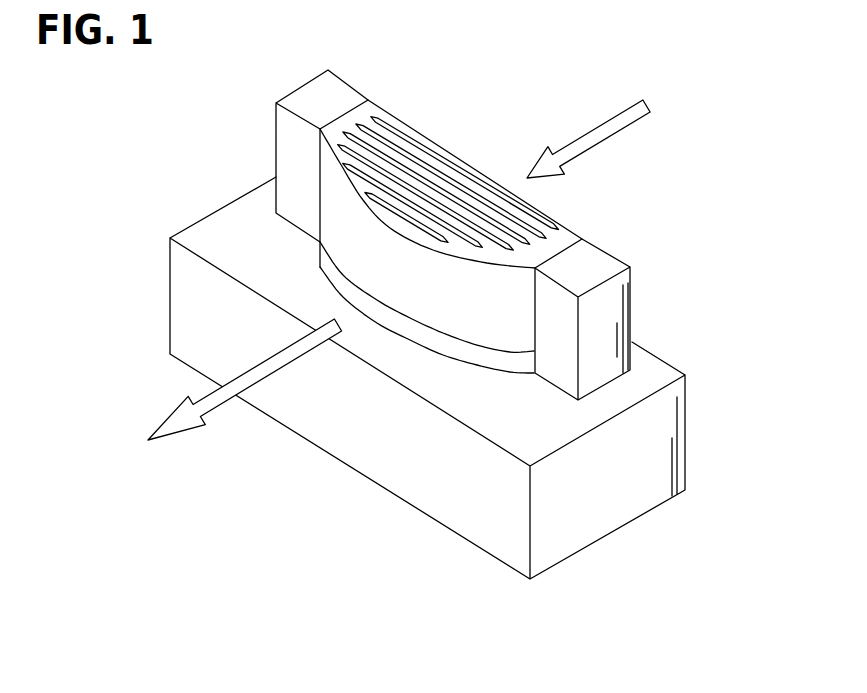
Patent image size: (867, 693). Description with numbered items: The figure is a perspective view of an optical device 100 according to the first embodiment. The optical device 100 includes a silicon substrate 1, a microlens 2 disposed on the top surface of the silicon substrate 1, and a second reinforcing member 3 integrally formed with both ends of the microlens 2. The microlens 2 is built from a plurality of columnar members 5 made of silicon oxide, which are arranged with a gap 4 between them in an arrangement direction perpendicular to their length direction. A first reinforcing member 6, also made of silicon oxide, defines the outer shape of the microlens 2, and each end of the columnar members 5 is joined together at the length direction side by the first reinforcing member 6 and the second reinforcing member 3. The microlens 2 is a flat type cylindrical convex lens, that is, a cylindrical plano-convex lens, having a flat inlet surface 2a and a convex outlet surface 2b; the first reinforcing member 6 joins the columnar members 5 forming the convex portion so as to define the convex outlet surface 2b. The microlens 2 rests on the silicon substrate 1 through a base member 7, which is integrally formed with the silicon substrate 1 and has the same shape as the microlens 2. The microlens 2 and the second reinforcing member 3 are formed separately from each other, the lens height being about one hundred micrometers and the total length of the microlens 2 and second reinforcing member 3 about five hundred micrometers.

The optical device 100 is at (449, 304).
The silicon substrate 1 is at (685, 428).
The microlens 2 is at (429, 312).
The flat inlet surface 2a is at (502, 180).
The convex outlet surface 2b is at (490, 332).
The second reinforcing member 3 is at (313, 100).
The gap 4 is at (409, 144).
The columnar members 5 is at (462, 180).
The first reinforcing member 6 is at (452, 248).
The base member 7 is at (443, 352).